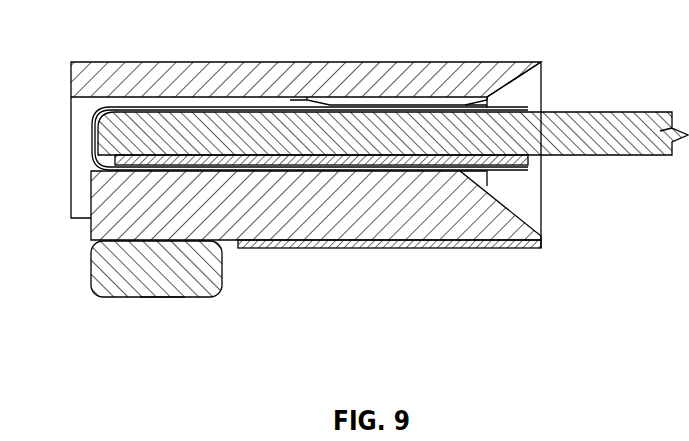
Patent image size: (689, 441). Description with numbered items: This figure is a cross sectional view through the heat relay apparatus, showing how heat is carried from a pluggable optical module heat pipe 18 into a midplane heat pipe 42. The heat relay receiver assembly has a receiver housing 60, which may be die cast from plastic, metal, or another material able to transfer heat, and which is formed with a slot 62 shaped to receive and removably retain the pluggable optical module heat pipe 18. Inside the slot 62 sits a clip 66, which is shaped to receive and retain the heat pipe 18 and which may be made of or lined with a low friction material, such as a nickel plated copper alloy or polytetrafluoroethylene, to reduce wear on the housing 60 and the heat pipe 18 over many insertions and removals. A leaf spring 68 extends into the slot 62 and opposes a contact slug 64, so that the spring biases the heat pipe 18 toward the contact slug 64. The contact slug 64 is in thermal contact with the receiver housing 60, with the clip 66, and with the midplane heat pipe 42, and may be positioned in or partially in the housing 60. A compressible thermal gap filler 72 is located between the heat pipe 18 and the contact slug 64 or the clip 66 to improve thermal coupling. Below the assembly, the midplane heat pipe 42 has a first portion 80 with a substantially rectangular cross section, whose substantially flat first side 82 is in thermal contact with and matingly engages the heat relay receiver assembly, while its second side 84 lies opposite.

The pluggable optical module heat pipe 18 is at (606, 112).
The midplane heat pipe 42 is at (150, 298).
The receiver housing 60 is at (421, 62).
The slot 62 is at (523, 76).
The contact slug 64 is at (230, 243).
The clip 66 is at (92, 145).
The leaf spring 68 is at (372, 97).
The compressible thermal gap filler 72 is at (530, 164).
The first portion 80 is at (97, 294).
The first side 82 is at (108, 229).
The second side 84 is at (172, 298).